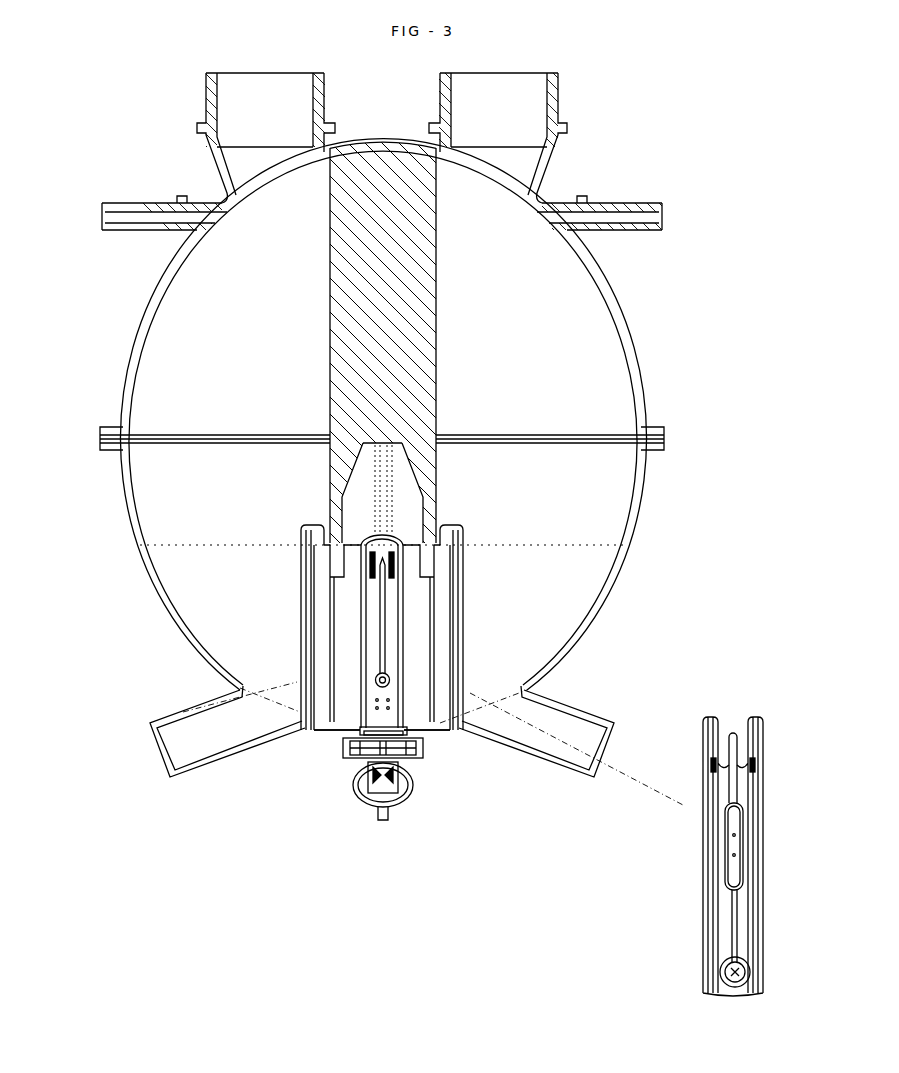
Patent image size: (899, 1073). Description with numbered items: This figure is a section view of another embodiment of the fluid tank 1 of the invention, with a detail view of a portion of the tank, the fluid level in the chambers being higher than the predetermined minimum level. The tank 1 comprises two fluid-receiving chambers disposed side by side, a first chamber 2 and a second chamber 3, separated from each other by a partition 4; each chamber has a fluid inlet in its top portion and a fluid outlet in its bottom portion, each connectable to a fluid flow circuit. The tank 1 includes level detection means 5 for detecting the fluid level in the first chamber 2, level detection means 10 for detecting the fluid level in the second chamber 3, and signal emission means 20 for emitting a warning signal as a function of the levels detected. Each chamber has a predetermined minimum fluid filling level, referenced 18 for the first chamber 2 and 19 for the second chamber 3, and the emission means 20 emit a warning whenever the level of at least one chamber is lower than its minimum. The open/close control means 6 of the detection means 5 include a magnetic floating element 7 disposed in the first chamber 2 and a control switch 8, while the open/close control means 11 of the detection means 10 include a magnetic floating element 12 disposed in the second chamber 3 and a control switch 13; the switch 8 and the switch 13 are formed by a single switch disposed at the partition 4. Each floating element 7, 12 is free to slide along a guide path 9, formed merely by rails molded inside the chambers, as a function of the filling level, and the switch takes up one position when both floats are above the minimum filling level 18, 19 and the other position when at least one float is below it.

The fluid tank 1 is at (627, 282).
The first chamber 2 is at (175, 350).
The second chamber 3 is at (610, 425).
The partition 4 is at (410, 356).
The level detection means 5 is at (288, 615).
The open/close control means 6 is at (380, 710).
The magnetic floating element 7 is at (293, 637).
The control switch 8 is at (298, 657).
The guide path 9 is at (297, 682).
The level detection means 10 is at (477, 610).
The open/close control means 11 is at (610, 769).
The magnetic floating element 12 is at (470, 632).
The control switch 13 is at (465, 660).
The predetermined minimum fluid filling level 18 is at (160, 548).
The predetermined minimum fluid filling level 19 is at (600, 545).
The signal emission means 20 is at (352, 802).